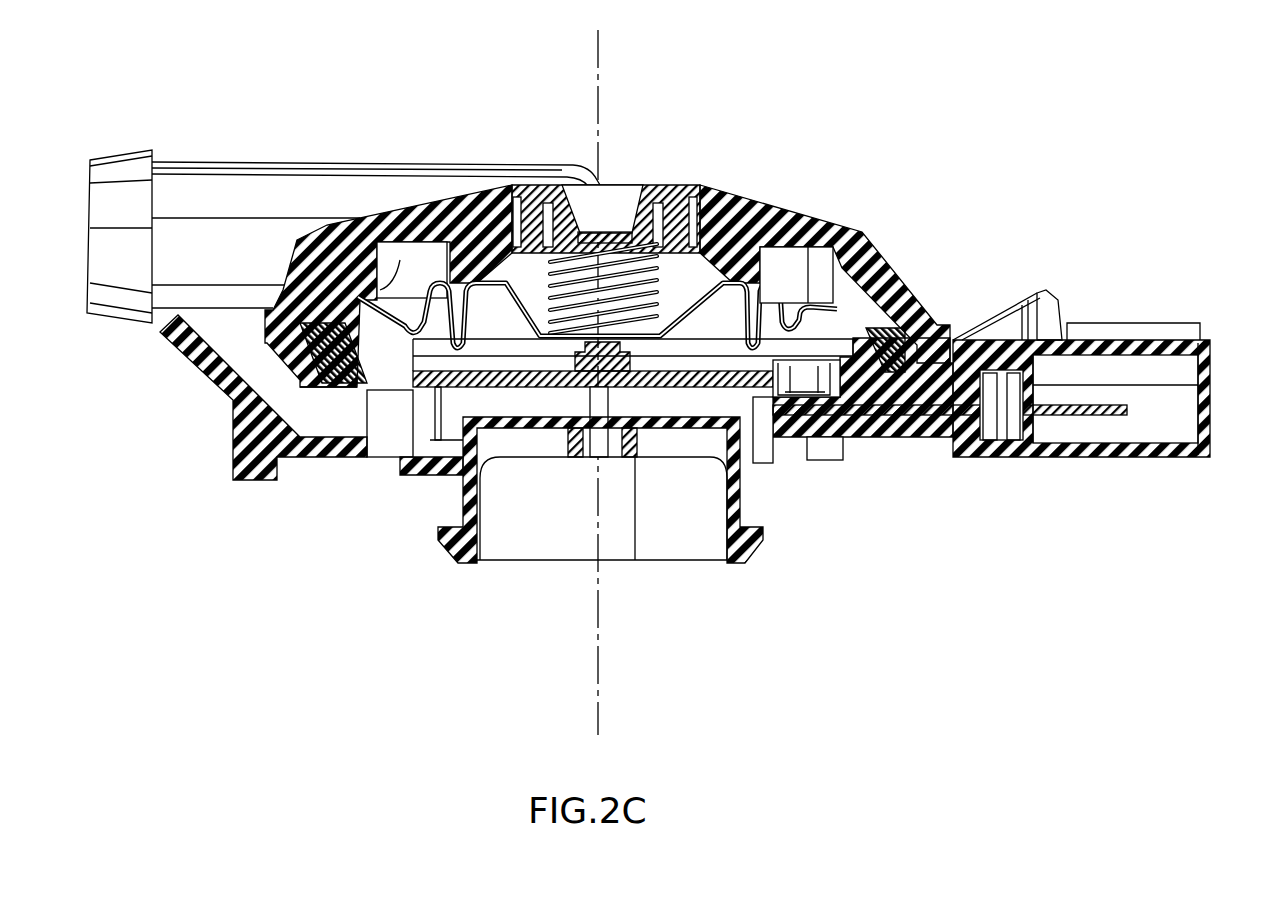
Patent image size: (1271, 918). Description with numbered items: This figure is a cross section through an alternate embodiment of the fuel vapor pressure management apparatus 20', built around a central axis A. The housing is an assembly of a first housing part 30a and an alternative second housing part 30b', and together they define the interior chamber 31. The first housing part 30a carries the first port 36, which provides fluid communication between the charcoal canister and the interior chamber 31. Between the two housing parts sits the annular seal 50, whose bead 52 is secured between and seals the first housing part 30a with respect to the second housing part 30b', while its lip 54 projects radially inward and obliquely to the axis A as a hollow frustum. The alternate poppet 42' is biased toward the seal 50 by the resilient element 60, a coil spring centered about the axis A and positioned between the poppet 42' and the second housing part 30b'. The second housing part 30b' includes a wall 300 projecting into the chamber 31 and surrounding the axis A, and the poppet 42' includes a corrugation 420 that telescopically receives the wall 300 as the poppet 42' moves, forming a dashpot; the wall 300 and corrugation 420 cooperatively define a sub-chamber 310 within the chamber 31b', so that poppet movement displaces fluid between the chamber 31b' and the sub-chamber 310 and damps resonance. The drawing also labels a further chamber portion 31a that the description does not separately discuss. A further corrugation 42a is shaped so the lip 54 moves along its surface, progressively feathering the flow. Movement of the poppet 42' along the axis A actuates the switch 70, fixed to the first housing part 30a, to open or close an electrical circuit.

The fuel vapor pressure management apparatus 20' is at (343, 179).
The interior chamber 31 is at (377, 105).
The chamber pocket 31a is at (412, 166).
The chamber 31b' is at (410, 183).
The poppet 42' is at (597, 220).
The resilient element 60 is at (540, 290).
The sub-chamber 310 is at (663, 186).
The wall 300 is at (773, 250).
The second housing part 30b' is at (867, 252).
The lip 54 is at (905, 285).
The bead 52 is at (908, 306).
The seal 50 is at (993, 238).
The corrugation 420 is at (390, 345).
The corrugation 42a is at (808, 312).
The switch 70 is at (600, 368).
The first port 36 is at (712, 563).
The first housing part 30a is at (903, 440).
The axis A is at (598, 712).